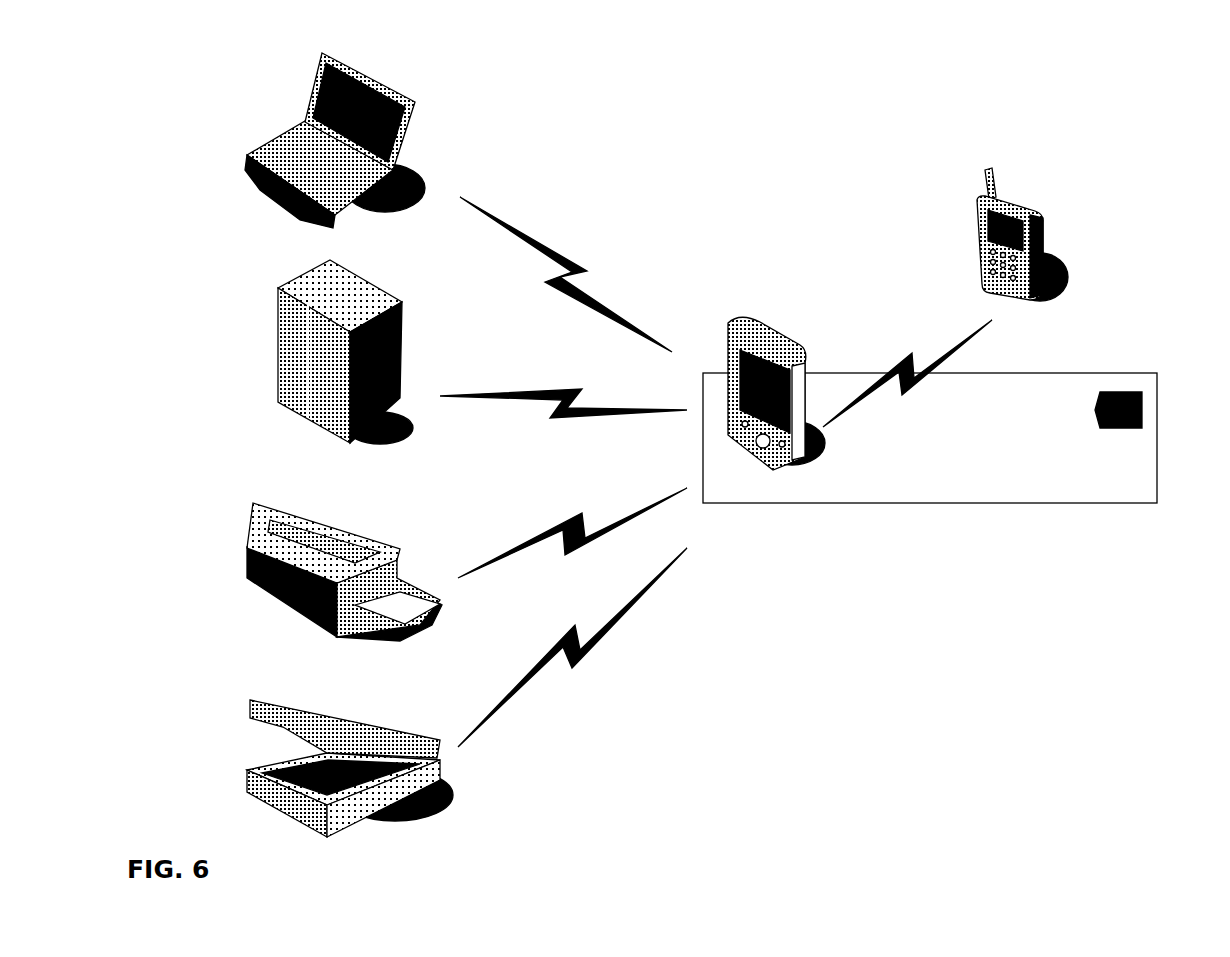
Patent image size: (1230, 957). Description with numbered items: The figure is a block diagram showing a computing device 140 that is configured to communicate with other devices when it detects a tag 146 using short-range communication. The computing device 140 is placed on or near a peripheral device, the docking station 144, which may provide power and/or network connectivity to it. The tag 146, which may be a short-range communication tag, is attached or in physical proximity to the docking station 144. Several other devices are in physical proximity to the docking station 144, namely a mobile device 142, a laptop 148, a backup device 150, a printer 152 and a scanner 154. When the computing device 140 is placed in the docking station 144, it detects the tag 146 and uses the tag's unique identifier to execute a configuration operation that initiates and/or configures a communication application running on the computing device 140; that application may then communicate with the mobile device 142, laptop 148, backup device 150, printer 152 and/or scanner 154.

The computing device 140 is at (780, 308).
The mobile device 142 is at (1017, 144).
The docking station 144 is at (747, 503).
The tag 146 is at (1142, 408).
The laptop 148 is at (188, 130).
The backup device 150 is at (188, 368).
The printer 152 is at (188, 583).
The scanner 154 is at (194, 783).